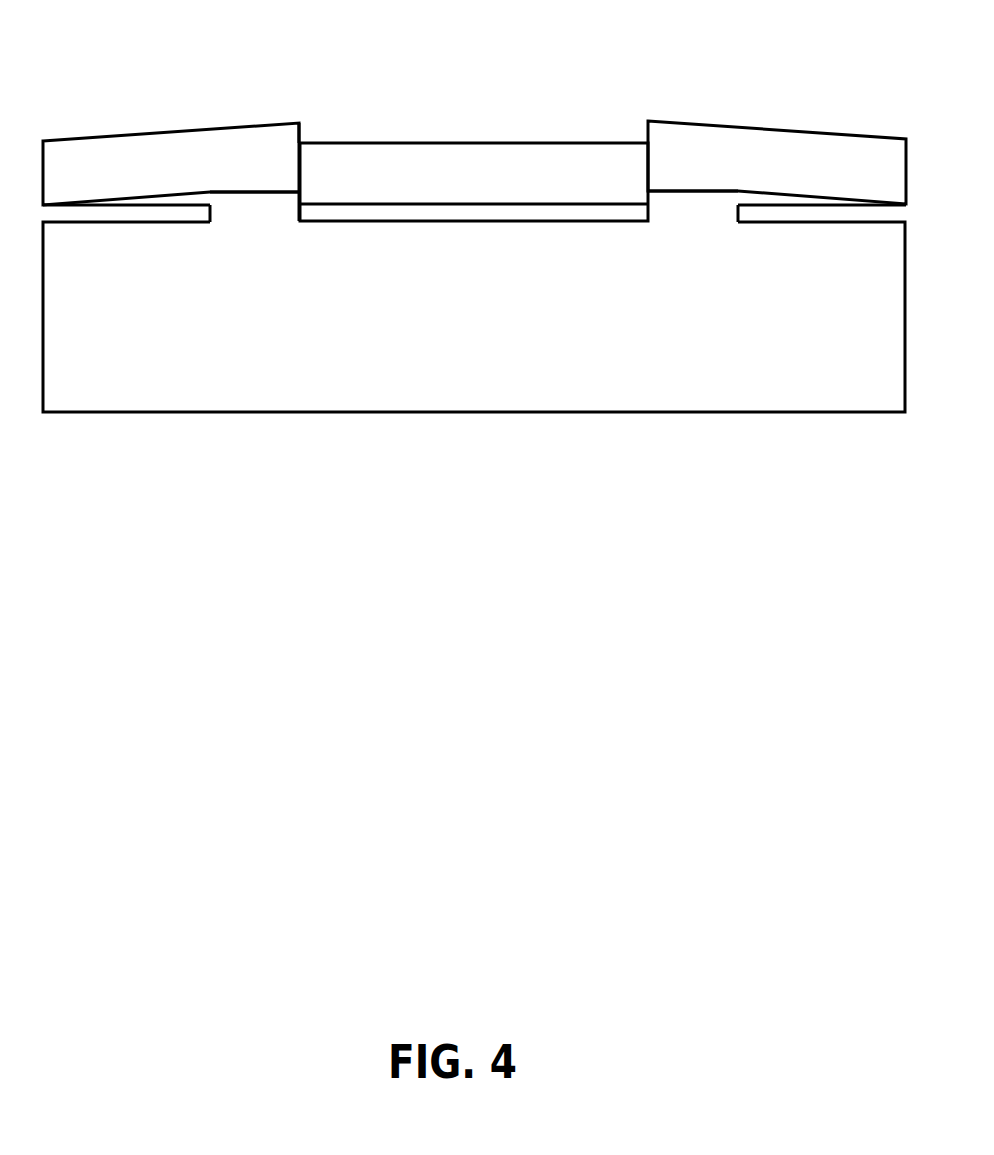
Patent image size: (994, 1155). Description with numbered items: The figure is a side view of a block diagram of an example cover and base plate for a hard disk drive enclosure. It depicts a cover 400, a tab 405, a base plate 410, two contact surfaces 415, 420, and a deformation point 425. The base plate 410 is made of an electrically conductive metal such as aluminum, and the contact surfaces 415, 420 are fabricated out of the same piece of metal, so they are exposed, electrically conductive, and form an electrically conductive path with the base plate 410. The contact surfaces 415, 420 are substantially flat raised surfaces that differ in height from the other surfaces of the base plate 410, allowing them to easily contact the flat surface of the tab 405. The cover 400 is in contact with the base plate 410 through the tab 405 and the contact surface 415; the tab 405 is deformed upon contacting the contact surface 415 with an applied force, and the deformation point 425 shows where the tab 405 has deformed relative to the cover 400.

The cover 400 is at (594, 150).
The tab 405 is at (223, 106).
The base plate 410 is at (516, 388).
The contact surface 415 is at (257, 220).
The contact surface 420 is at (692, 221).
The deformation point 425 is at (317, 114).